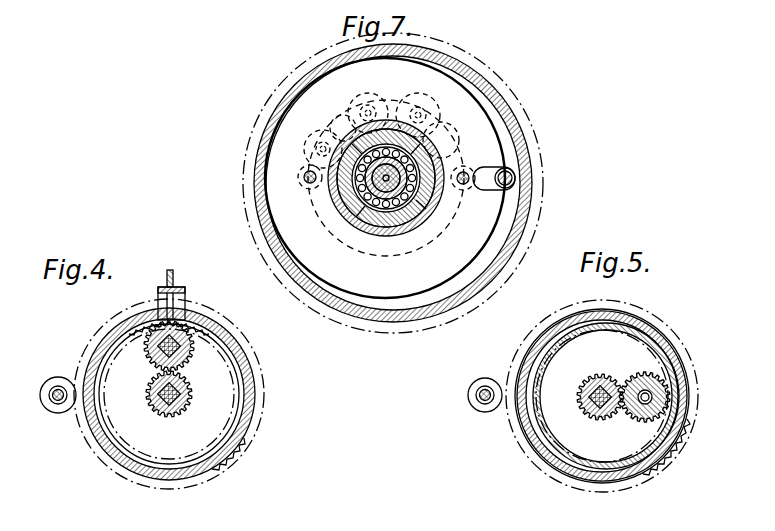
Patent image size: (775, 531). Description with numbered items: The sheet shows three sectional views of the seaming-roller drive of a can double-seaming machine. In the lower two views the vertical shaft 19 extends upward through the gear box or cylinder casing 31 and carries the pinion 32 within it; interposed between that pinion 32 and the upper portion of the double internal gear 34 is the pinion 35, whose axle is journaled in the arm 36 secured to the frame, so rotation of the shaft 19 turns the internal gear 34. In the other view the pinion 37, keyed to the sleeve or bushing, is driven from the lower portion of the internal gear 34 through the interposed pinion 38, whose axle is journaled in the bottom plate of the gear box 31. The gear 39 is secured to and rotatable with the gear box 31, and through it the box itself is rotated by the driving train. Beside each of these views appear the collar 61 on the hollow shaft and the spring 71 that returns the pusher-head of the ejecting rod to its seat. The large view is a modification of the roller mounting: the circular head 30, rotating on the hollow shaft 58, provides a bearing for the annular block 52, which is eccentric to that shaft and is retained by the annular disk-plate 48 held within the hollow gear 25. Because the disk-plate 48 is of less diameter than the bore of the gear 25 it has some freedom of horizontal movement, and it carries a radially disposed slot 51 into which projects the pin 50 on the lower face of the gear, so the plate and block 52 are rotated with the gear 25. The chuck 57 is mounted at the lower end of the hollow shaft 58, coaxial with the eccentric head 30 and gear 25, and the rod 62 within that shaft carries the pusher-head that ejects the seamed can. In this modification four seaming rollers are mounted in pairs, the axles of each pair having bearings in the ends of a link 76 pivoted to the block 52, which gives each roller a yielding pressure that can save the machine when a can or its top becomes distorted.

In FIG. 7, the link 76 is at (343, 127).
In FIG. 7, the annular disk-plate 48 is at (487, 106).
In FIG. 7, the hollow gear 25 is at (536, 158).
In FIG. 7, the radially disposed slot 51 is at (490, 167).
In FIG. 7, the pin 50 is at (500, 189).
In FIG. 7, the chuck 57 is at (437, 222).
In FIG. 7, the annular block 52 is at (418, 221).
In FIG. 7, the hollow shaft 58 is at (394, 205).
In FIG. 7, the rod 62 is at (372, 213).
In FIG. 4, the rod 62 is at (57, 402).
In FIG. 5, the rod 62 is at (487, 401).
In FIG. 7, the circular head 30 is at (326, 174).
In FIG. 4, the arm 36 is at (178, 277).
In FIG. 4, the double internal gear 34 is at (181, 322).
In FIG. 5, the double internal gear 34 is at (658, 348).
In FIG. 4, the pinion 35 is at (188, 360).
In FIG. 4, the pinion 32 is at (156, 410).
In FIG. 4, the vertical shaft 19 is at (180, 408).
In FIG. 5, the vertical shaft 19 is at (602, 412).
In FIG. 4, the gear 39 is at (233, 470).
In FIG. 5, the gear 39 is at (674, 457).
In FIG. 4, the gear box or cylinder casing 31 is at (133, 469).
In FIG. 5, the gear box or cylinder casing 31 is at (533, 344).
In FIG. 4, the spring 71 is at (57, 385).
In FIG. 5, the spring 71 is at (480, 401).
In FIG. 4, the collar 61 is at (50, 399).
In FIG. 5, the collar 61 is at (474, 393).
In FIG. 5, the pinion 37 is at (594, 412).
In FIG. 5, the pinion 38 is at (640, 420).